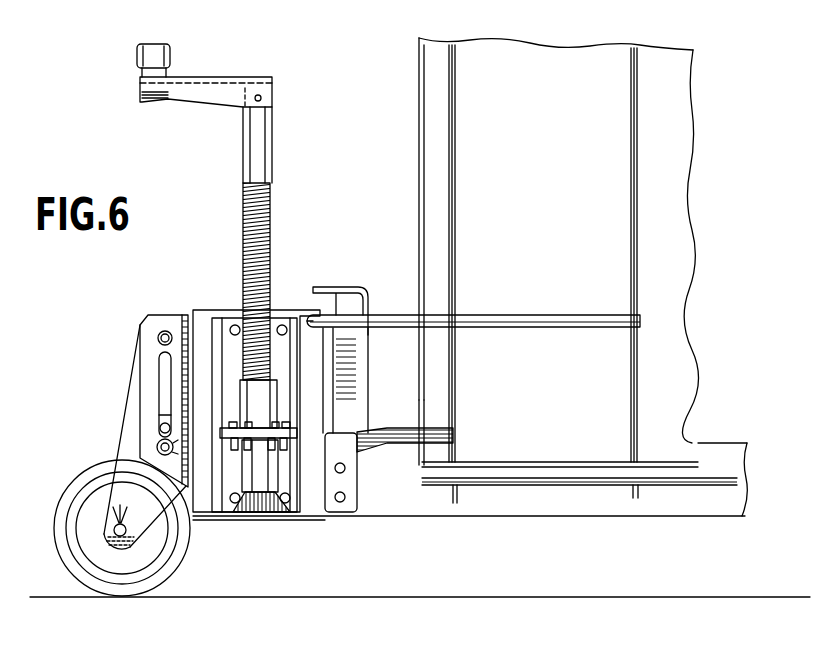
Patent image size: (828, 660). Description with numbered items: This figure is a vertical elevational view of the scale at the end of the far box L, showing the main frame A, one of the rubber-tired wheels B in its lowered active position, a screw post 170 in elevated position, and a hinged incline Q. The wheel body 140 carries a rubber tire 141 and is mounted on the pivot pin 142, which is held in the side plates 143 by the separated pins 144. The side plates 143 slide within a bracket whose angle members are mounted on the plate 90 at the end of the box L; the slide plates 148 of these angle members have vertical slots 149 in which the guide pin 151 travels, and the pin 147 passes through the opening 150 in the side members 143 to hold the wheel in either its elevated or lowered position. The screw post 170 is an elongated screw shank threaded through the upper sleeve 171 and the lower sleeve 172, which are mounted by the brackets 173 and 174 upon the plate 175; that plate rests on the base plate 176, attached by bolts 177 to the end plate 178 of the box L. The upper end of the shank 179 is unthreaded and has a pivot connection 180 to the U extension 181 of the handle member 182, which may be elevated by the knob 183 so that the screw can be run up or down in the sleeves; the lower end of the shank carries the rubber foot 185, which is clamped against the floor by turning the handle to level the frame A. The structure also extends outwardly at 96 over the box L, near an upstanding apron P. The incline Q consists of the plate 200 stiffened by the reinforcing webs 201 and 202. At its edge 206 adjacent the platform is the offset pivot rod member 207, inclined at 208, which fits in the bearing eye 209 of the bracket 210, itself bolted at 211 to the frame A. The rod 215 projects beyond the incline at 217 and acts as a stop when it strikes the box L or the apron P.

The knob 183 is at (137, 58).
The handle member 182 is at (170, 92).
The U extension 181 is at (229, 96).
The pivot connection 180 is at (263, 98).
The shank 179 is at (266, 118).
The screw post 170 is at (271, 222).
The bolts 177 is at (279, 326).
The end plate 178 is at (202, 365).
The pin 147 is at (167, 331).
The slide plate 148 is at (153, 398).
The vertical slot 149 is at (162, 408).
The opening 150 is at (162, 427).
The guide pin 151 is at (162, 452).
The side plate 143 is at (123, 468).
The separated pins 144 is at (102, 537).
The rubber tire 141 is at (56, 522).
The wheel body 140 is at (92, 547).
The pivot pin 142 is at (113, 529).
The plate 90 is at (187, 498).
The upper sleeve 171 is at (275, 396).
The bracket 173 is at (292, 430).
The plate 175 is at (232, 435).
The lower sleeve 172 is at (262, 476).
The rubber foot 185 is at (258, 506).
The bracket 174 is at (234, 451).
The base plate 176 is at (283, 363).
The outward extension 96 is at (329, 287).
The rod 215 is at (522, 318).
The projecting end of rod 217 is at (353, 314).
The bearing eye 209 is at (335, 446).
The bracket 210 is at (340, 512).
The bolt 211 is at (346, 498).
The inclined portion of pivot rod 208 is at (369, 430).
The offset pivot rod member 207 is at (417, 440).
The reenforcing web 201 is at (452, 155).
The reenforcing web 202 is at (637, 192).
The plate 200 is at (673, 128).
The edge 206 is at (513, 462).
The incline Q is at (583, 62).
The far box L is at (291, 304).
The upstanding apron P is at (364, 283).
The main frame A is at (562, 498).
The rubber-tired wheel B is at (121, 596).